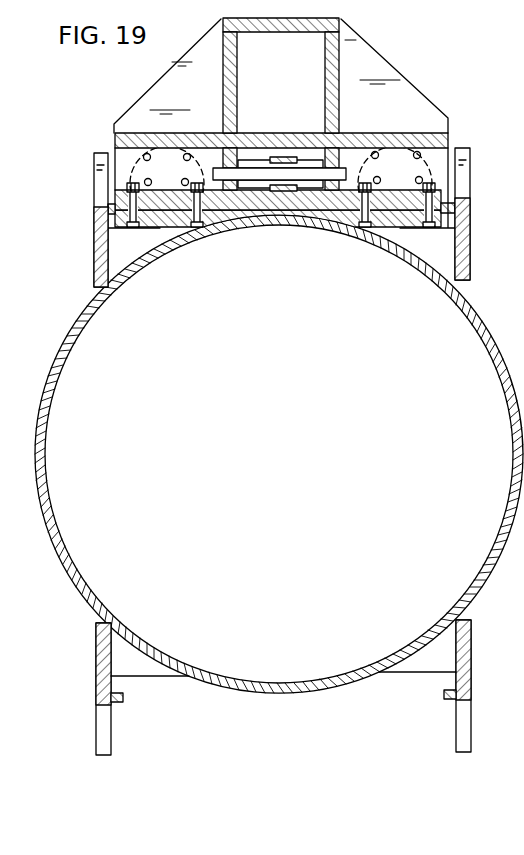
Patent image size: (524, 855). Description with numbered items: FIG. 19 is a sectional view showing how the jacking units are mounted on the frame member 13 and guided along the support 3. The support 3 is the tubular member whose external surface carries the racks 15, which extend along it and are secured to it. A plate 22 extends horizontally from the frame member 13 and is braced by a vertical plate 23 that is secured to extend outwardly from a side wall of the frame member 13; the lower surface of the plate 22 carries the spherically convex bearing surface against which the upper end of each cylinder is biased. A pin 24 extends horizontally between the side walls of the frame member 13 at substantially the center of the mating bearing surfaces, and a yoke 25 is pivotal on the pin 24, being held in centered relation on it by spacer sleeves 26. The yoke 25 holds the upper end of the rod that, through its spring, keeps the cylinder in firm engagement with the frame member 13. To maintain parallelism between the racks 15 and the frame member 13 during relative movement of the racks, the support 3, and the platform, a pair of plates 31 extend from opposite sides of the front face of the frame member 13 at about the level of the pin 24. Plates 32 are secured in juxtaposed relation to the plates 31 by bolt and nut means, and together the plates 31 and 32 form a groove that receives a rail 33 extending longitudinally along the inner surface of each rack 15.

The support 3 is at (72, 581).
The frame member 13 is at (342, 66).
The rack 15 is at (100, 246).
The plate 22 is at (125, 157).
The vertical plate 23 is at (392, 133).
The pin 24 is at (270, 183).
The yoke 25 is at (268, 152).
The spacer sleeve 26 is at (247, 146).
The plate 31 is at (110, 199).
The plate 32 is at (186, 224).
The rail 33 is at (108, 210).